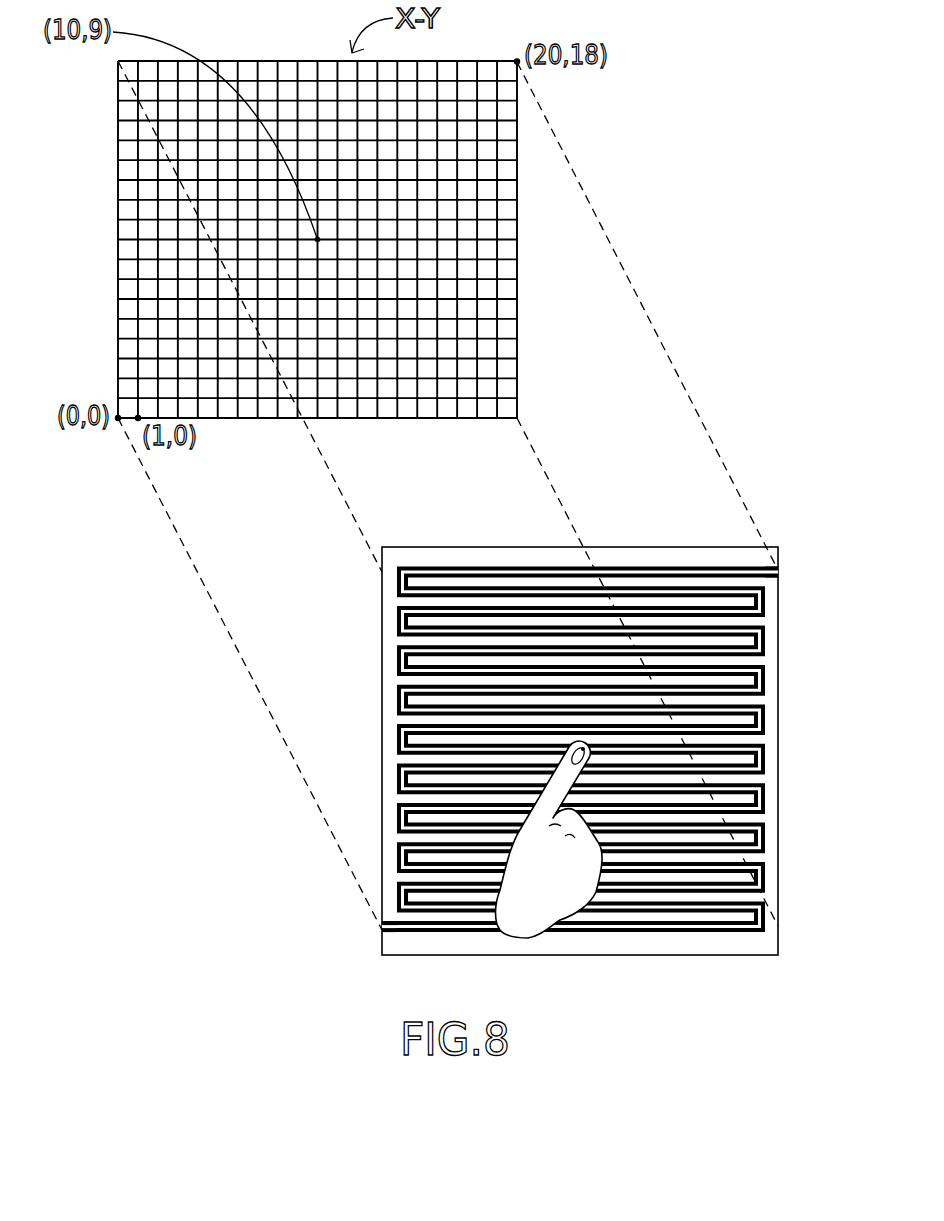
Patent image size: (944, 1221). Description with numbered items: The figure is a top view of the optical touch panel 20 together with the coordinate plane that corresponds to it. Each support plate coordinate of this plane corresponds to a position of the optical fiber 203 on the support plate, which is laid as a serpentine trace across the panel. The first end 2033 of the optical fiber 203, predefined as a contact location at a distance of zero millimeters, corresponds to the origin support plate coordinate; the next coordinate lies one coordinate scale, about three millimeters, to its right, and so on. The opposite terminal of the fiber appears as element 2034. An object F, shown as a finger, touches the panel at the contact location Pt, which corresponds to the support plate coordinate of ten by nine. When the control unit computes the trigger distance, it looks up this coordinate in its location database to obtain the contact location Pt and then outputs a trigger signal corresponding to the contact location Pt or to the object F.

The optical touch panel 20 is at (580, 742).
The optical fiber 203 is at (691, 928).
The first end of the optical fiber 2033 is at (382, 938).
The second terminal of sensing electrode 2034 is at (774, 576).
The object F is at (578, 747).
The contact location Pt is at (585, 752).